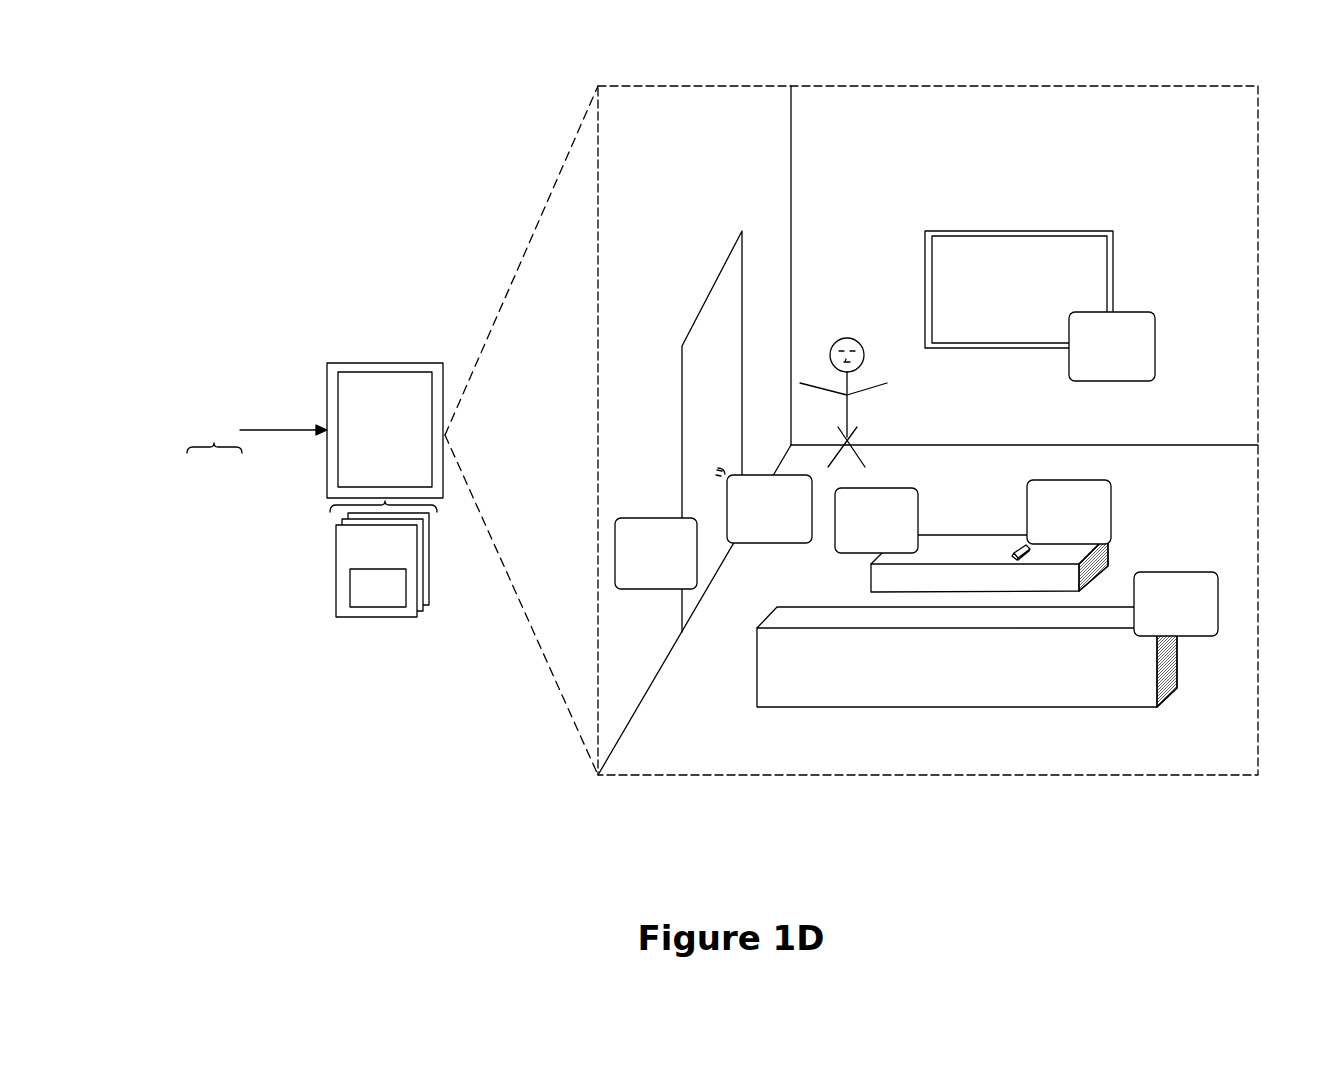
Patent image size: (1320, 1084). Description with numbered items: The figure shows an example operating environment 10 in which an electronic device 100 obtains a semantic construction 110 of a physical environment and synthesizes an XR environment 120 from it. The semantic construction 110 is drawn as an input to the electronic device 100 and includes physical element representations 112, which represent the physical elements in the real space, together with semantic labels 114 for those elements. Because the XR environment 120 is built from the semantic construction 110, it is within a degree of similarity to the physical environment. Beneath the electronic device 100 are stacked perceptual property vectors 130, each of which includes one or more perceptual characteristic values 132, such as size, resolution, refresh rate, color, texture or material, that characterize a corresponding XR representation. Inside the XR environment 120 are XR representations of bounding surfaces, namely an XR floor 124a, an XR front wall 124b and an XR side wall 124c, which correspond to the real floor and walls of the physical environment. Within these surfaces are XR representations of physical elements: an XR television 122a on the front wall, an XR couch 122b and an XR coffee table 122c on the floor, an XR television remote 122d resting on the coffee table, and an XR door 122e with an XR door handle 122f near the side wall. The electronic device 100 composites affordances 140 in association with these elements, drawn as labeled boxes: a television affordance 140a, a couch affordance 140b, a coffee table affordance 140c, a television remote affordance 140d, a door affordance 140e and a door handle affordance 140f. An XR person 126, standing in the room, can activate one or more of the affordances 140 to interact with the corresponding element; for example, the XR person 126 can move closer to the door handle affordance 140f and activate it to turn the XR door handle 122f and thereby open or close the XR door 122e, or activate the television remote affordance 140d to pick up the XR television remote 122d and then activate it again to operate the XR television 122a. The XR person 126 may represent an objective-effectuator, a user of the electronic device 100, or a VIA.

The operating environment 10 is at (140, 59).
The electronic device 100 is at (365, 441).
The semantic construction 110 is at (262, 430).
The physical element representations 112 is at (214, 461).
The semantic labels 114 is at (212, 495).
The XR environment 120 is at (594, 80).
The XR television 122a is at (1049, 298).
The XR couch 122b is at (933, 674).
The XR coffee table 122c is at (871, 578).
The XR television remote 122d is at (1013, 551).
The XR door 122e is at (739, 393).
The XR door handle 122f is at (724, 467).
The XR floor 124a is at (1189, 494).
The XR front wall 124b is at (1186, 141).
The XR side wall 124c is at (724, 149).
The XR person 126 is at (853, 440).
The perceptual property vectors 130 is at (357, 558).
The perceptual characteristic values 132 is at (358, 601).
The affordances 140 is at (916, 474).
The television affordance 140a is at (1089, 344).
The couch affordance 140b is at (1153, 604).
The coffee table affordance 140c is at (853, 521).
The television remote affordance 140d is at (1046, 511).
The door affordance 140e is at (633, 551).
The door handle affordance 140f is at (746, 508).